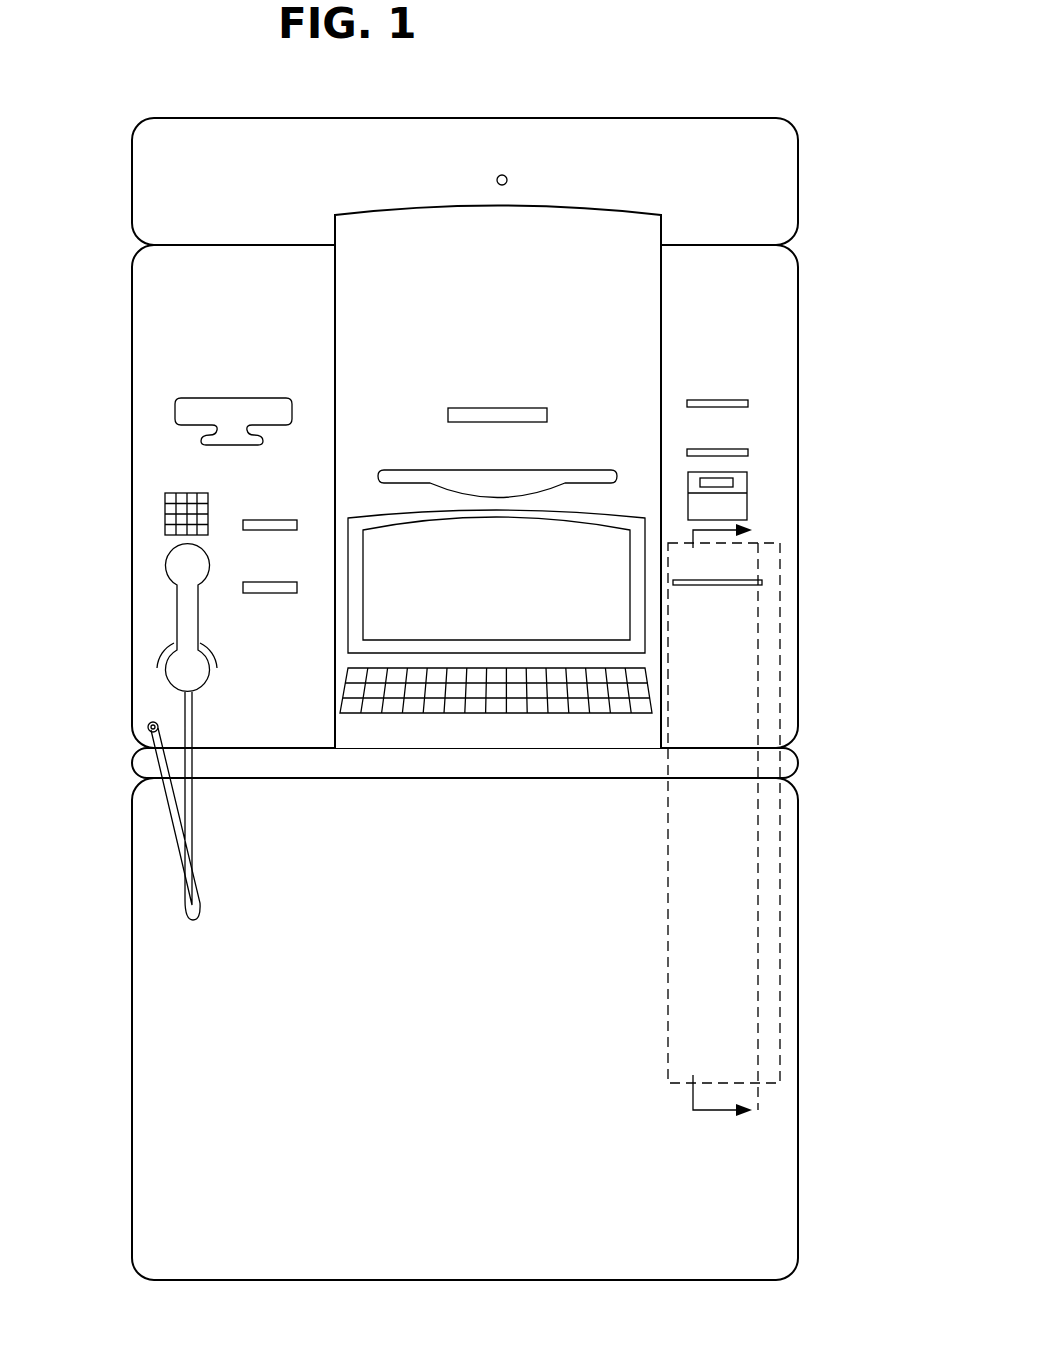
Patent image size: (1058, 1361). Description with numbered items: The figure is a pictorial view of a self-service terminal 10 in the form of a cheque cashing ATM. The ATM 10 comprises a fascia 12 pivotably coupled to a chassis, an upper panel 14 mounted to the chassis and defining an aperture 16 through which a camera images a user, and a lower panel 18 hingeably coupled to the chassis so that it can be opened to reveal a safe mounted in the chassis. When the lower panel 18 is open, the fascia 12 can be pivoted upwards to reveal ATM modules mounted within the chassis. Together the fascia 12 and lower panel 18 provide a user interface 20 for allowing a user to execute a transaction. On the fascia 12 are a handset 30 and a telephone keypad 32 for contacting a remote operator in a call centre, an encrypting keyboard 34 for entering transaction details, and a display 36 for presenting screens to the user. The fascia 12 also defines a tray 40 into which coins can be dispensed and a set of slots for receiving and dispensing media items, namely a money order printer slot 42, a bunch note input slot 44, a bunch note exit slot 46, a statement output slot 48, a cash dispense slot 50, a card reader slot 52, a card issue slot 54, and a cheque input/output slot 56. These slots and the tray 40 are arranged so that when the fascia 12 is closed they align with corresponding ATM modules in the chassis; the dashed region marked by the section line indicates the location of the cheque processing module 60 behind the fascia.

The self-service terminal 10 is at (734, 81).
The fascia 12 is at (158, 296).
The upper panel 14 is at (776, 181).
The aperture 16 is at (502, 175).
The lower panel 18 is at (150, 1153).
The user interface 20 is at (239, 919).
The handset 30 is at (175, 610).
The telephone keypad 32 is at (170, 511).
The encrypting keyboard 34 is at (377, 685).
The display 36 is at (515, 592).
The tray 40 is at (747, 487).
The money order printer slot 42 is at (178, 410).
The bunch note input slot 44 is at (265, 520).
The bunch note exit slot 46 is at (268, 594).
The statement output slot 48 is at (503, 410).
The cash dispense slot 50 is at (507, 477).
The card reader slot 52 is at (740, 400).
The card issue slot 54 is at (748, 449).
The cheque input/output slot 56 is at (722, 585).
The cheque processing module 60 is at (780, 910).